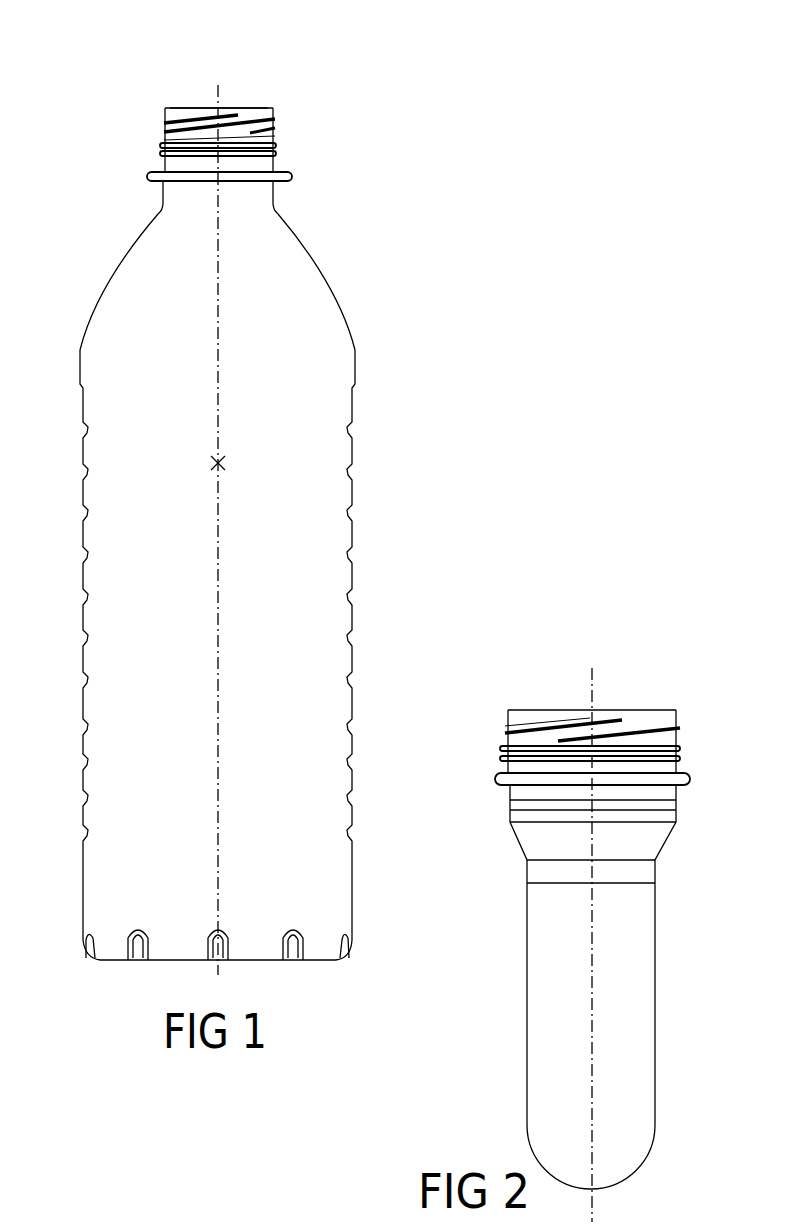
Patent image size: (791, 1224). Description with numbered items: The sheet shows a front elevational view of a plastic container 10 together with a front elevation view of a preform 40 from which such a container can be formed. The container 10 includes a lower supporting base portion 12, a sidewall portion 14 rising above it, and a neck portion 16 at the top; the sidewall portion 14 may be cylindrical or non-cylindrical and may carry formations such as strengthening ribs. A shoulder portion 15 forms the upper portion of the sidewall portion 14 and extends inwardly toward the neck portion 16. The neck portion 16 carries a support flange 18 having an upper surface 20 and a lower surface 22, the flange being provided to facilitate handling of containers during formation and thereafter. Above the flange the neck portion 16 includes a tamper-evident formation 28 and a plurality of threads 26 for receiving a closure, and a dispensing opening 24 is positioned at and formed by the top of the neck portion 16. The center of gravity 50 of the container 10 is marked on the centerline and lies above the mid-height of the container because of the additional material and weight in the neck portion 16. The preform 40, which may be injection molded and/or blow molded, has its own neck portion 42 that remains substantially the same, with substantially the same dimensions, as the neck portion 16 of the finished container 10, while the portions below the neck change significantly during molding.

In FIG. 1, the container 10 is at (367, 190).
In FIG. 1, the lower supporting base portion 12 is at (62, 915).
In FIG. 1, the sidewall portion 14 is at (62, 181).
In FIG. 1, the shoulder portion 15 is at (352, 280).
In FIG. 1, the neck portion 16 is at (134, 108).
In FIG. 1, the support flange 18 is at (303, 178).
In FIG. 1, the upper surface 20 is at (281, 172).
In FIG. 1, the lower surface 22 is at (283, 183).
In FIG. 1, the dispensing opening 24 is at (258, 92).
In FIG. 1, the threads 26 is at (215, 108).
In FIG. 1, the tamper-evident formation 28 is at (277, 145).
In FIG. 1, the center of gravity 50 is at (233, 463).
In FIG. 2, the preform 40 is at (700, 746).
In FIG. 2, the neck portion 42 is at (485, 708).